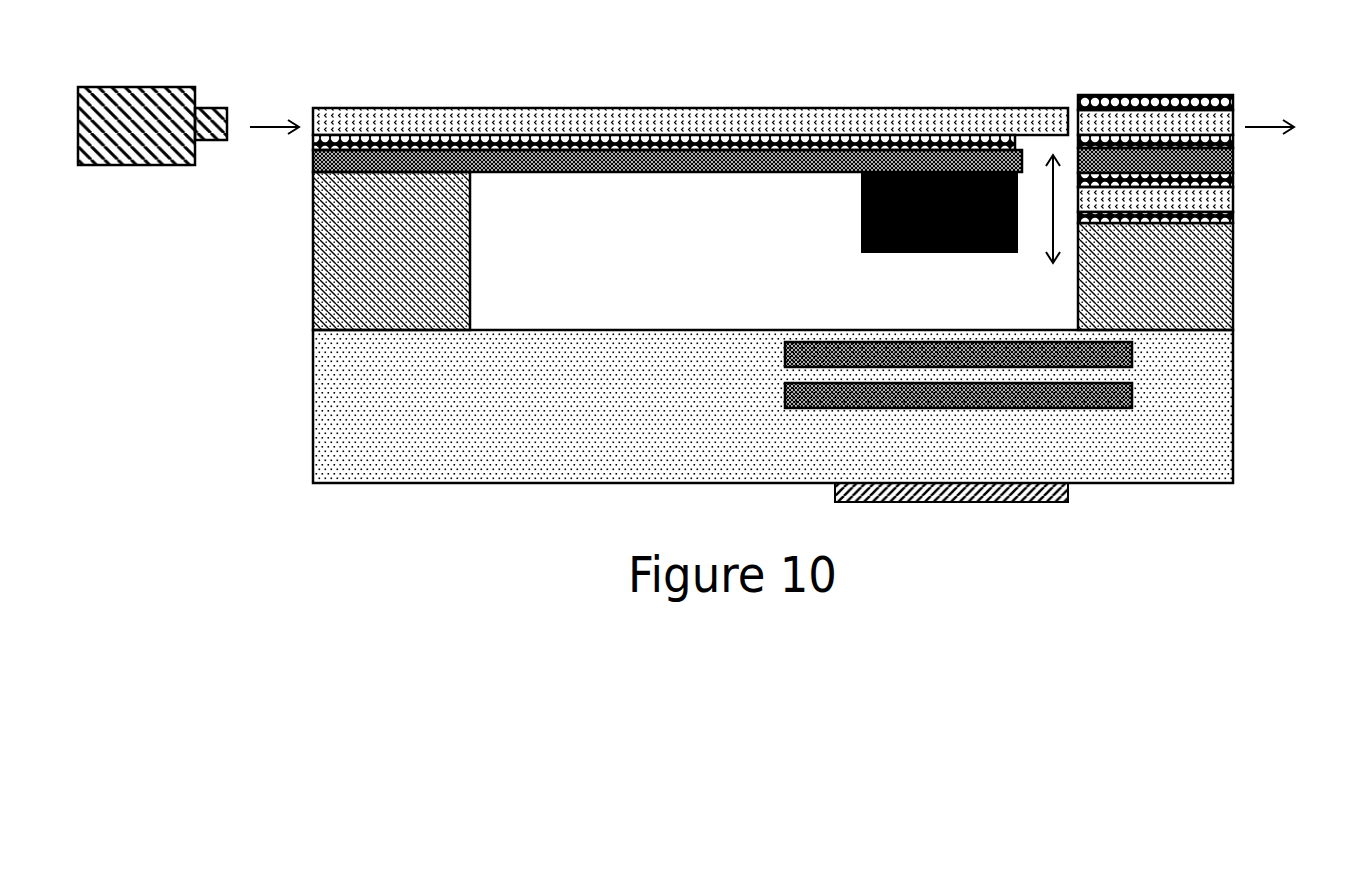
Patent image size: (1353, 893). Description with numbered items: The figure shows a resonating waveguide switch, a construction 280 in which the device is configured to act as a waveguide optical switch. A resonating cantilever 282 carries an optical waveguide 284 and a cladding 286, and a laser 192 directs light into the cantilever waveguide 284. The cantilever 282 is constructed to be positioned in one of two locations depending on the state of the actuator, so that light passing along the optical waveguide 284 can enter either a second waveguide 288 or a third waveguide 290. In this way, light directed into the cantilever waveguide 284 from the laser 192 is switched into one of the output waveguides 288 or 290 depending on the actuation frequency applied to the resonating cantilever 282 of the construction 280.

The laser 192 is at (122, 165).
The construction 280 is at (821, 254).
The resonating cantilever 282 is at (750, 172).
The optical waveguide 284 is at (607, 108).
The cladding 286 is at (787, 137).
The second waveguide 288 is at (1228, 123).
The third waveguide 290 is at (1233, 197).